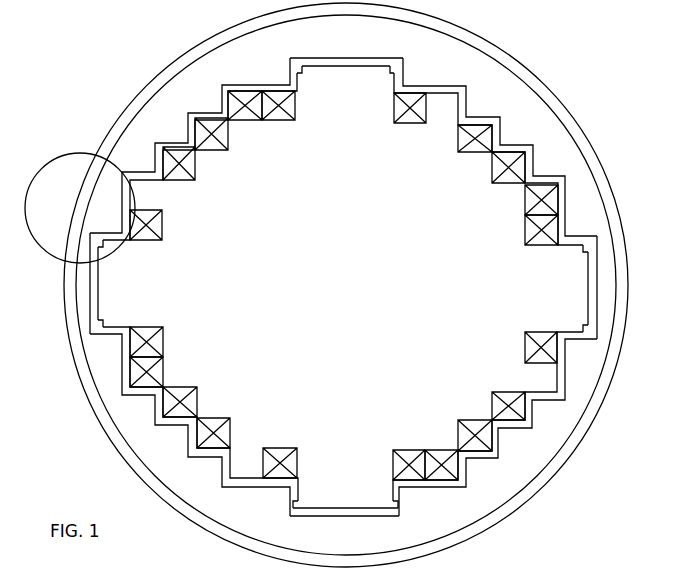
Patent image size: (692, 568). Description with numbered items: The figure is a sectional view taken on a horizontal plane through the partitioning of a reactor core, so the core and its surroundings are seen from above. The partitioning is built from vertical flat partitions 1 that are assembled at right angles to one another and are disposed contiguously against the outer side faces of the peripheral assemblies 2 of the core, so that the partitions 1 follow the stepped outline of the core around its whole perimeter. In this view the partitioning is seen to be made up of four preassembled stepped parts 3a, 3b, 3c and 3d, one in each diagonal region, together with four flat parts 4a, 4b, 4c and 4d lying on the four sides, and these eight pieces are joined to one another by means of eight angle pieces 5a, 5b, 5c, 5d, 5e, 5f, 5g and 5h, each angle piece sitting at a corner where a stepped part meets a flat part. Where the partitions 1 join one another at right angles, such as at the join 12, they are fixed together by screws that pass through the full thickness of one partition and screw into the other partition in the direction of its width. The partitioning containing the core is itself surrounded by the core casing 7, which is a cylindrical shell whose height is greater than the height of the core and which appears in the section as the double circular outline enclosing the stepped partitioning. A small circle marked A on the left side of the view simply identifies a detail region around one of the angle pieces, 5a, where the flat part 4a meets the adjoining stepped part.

The vertical flat partition 1 is at (498, 445).
The peripheral assembly 2 is at (277, 97).
The preassembled stepped part 3a is at (192, 133).
The preassembled stepped part 3b is at (516, 148).
The preassembled stepped part 3c is at (531, 422).
The preassembled stepped part 3d is at (165, 420).
The flat part 4a is at (88, 290).
The flat part 4b is at (371, 42).
The flat part 4c is at (598, 292).
The flat part 4d is at (345, 516).
The angle piece 5a is at (88, 233).
The angle piece 5b is at (290, 63).
The angle piece 5c is at (401, 62).
The angle piece 5d is at (596, 243).
The angle piece 5e is at (596, 334).
The angle piece 5f is at (401, 512).
The angle piece 5g is at (290, 512).
The angle piece 5h is at (90, 333).
The core casing 7 is at (616, 347).
The right-angle join of partitions 12 is at (393, 95).
The detail area A is at (80, 153).